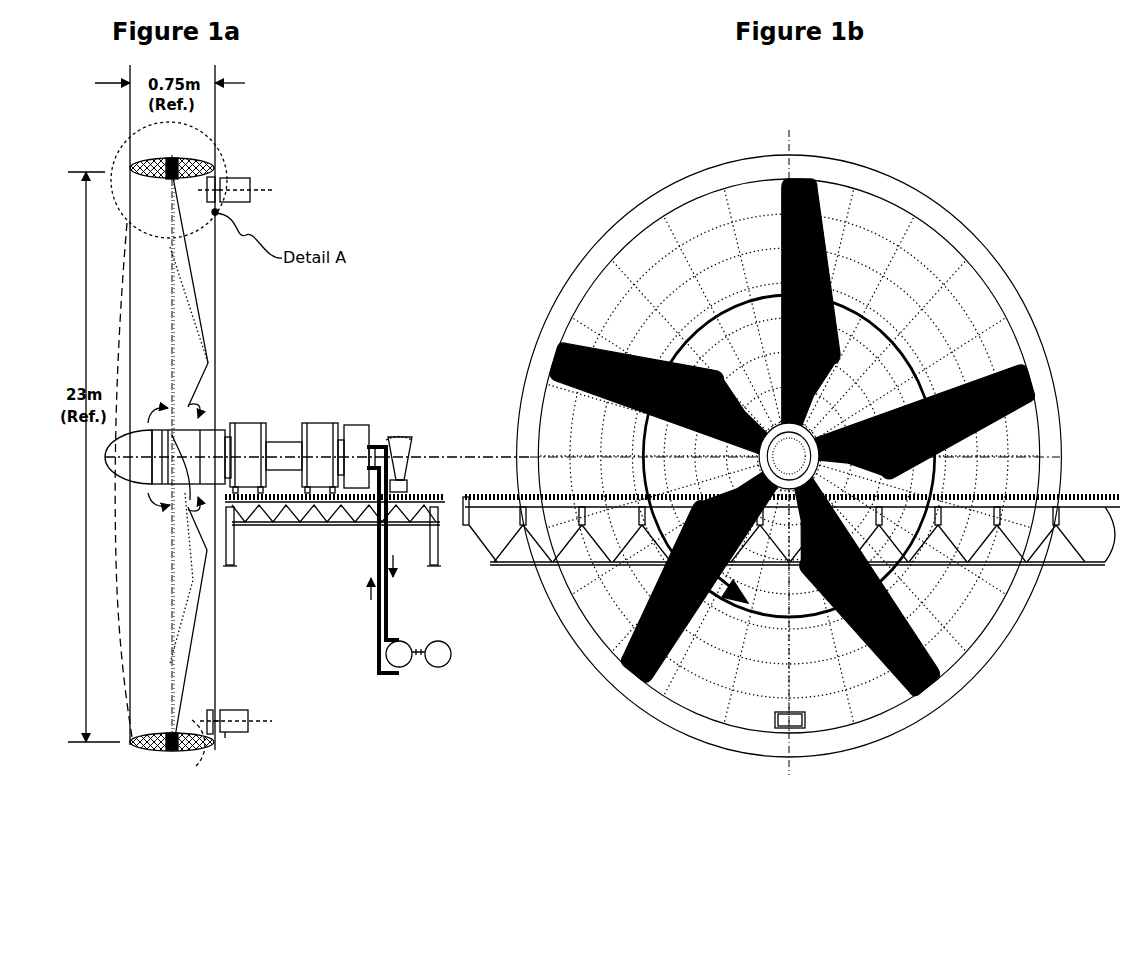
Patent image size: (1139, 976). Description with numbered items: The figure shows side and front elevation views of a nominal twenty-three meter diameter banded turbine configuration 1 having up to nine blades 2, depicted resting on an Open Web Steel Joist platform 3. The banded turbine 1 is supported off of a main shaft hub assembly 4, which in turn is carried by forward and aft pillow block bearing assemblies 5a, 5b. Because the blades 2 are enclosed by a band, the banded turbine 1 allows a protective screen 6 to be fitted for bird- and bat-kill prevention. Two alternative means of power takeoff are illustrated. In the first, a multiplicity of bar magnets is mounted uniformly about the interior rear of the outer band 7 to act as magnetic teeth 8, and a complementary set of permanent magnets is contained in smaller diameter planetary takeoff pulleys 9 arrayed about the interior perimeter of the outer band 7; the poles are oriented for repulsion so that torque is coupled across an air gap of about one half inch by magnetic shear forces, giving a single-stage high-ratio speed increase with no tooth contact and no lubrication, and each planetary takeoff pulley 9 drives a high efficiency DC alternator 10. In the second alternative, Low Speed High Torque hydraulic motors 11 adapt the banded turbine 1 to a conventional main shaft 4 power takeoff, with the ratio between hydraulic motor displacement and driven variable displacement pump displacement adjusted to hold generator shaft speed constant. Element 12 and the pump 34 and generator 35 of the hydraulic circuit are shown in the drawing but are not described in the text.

In FIG. 1b, the banded turbine configuration 1 is at (657, 195).
In FIG. 1a, the blades 2 is at (200, 318).
In FIG. 1b, the blades 2 is at (800, 165).
In FIG. 1b, the Open Web Steel Joist platform 3 is at (1085, 566).
In FIG. 1a, the main shaft hub assembly 4 is at (278, 467).
In FIG. 1a, the forward pillow block bearing assembly 5a is at (248, 430).
In FIG. 1a, the aft pillow block bearing assembly 5b is at (313, 430).
In FIG. 1b, the protective screen 6 is at (855, 200).
In FIG. 1a, the outer band 7 is at (204, 170).
In FIG. 1a, the teeth 8 is at (222, 748).
In FIG. 1a, the planetary takeoff pulleys 9 is at (210, 705).
In FIG. 1a, the DC alternator 10 is at (233, 722).
In FIG. 1a, the Low Speed High Torque hydraulic motor 11 is at (355, 430).
In FIG. 1a, the hopper 12 is at (405, 437).
In FIG. 1a, the pump 34 is at (407, 665).
In FIG. 1a, the generator 35 is at (452, 656).